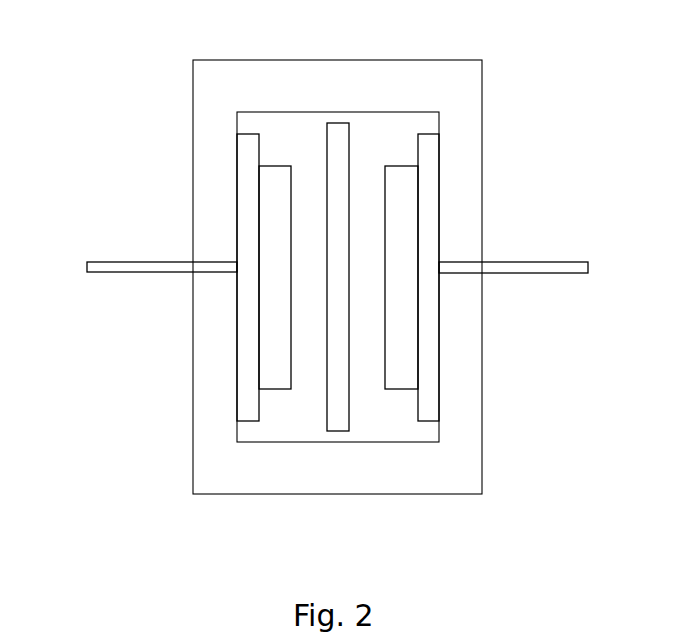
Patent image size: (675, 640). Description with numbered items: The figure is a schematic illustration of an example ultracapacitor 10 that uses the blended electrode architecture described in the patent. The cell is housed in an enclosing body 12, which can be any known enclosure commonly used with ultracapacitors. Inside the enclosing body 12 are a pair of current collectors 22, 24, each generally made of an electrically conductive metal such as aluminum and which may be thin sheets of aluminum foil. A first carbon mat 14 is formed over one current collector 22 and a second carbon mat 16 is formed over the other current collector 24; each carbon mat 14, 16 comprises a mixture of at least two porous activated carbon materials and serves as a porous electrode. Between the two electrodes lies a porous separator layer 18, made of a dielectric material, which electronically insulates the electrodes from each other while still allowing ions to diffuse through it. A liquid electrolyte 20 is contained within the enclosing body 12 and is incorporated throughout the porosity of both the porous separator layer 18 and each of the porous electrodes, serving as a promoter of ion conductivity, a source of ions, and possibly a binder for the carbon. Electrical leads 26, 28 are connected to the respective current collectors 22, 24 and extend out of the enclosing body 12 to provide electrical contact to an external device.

The ultracapacitor 10 is at (122, 67).
The enclosing body 12 is at (448, 473).
The first carbon mat 14 is at (279, 378).
The second carbon mat 16 is at (403, 378).
The porous separator layer 18 is at (337, 133).
The liquid electrolyte 20 is at (401, 155).
The current collector 22 is at (247, 187).
The current collector 24 is at (425, 190).
The electrical lead 26 is at (118, 267).
The electrical lead 28 is at (562, 269).